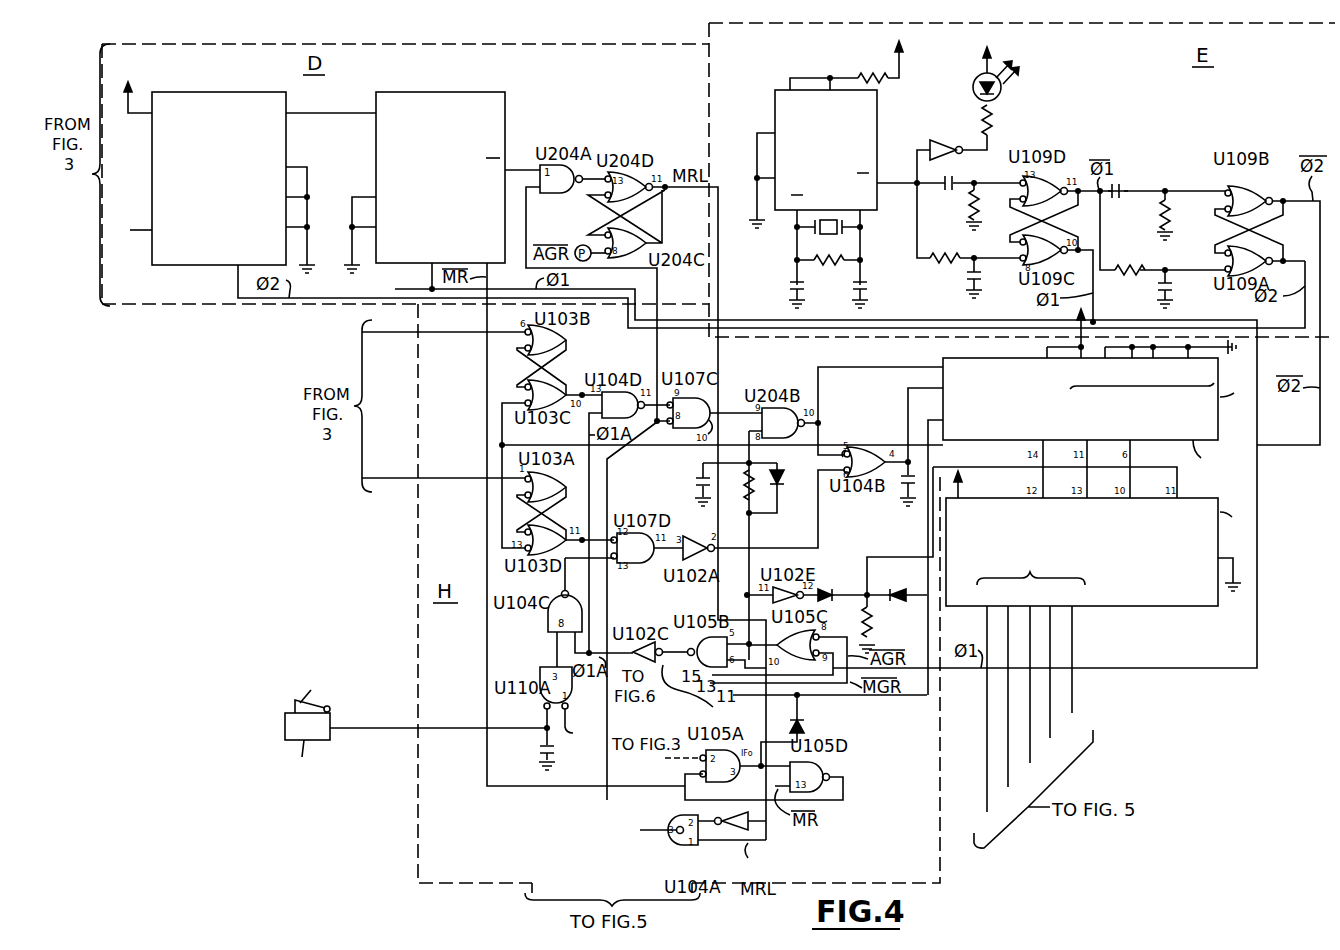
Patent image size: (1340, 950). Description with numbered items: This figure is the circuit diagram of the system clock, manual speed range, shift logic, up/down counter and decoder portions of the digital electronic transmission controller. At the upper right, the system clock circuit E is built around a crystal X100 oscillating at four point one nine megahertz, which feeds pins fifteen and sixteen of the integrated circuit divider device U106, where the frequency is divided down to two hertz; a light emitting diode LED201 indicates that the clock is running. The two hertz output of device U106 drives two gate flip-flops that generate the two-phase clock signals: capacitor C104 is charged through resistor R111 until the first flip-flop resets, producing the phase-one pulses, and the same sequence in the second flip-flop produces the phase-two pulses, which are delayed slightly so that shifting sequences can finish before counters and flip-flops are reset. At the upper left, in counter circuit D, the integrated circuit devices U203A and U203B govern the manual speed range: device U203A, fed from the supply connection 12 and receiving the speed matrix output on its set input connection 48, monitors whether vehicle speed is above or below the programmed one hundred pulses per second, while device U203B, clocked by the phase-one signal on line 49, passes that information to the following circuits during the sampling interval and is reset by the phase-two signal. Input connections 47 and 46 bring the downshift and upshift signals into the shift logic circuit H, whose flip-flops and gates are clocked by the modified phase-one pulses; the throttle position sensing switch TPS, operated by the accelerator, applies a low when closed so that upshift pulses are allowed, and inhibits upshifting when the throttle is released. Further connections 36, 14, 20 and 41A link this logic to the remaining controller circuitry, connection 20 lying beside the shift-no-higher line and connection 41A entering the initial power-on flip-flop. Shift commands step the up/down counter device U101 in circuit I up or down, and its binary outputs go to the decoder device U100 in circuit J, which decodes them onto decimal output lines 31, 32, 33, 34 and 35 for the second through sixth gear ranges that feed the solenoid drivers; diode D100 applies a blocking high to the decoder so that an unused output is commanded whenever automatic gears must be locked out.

The 12 volt supply 12 is at (132, 87).
The set input line from FIG. 3 48 is at (127, 230).
The phase one clock line 49 is at (811, 473).
The input line from FIG. 3 47 is at (443, 331).
The input line from FIG. 3 46 is at (443, 478).
The line to FIG. 5 36 is at (608, 816).
The line to FIG. 6 14 is at (646, 841).
The SNH line to FIG. 6 20 is at (580, 743).
The line to FIG. 3 41A is at (665, 762).
The decimal output line 2 to FIG. 5 31 is at (986, 717).
The decimal output line 3 to FIG. 5 32 is at (1007, 706).
The decimal output line 4 to FIG. 5 33 is at (1029, 694).
The decimal output line 5 to FIG. 5 34 is at (1051, 682).
The decimal output line 6 to FIG. 5 35 is at (1072, 670).
The integrated circuit device U203A is at (261, 178).
The integrated circuit device U203B is at (448, 177).
The integrated circuit divider device U106 is at (830, 157).
The light emitting diode LED201 is at (1022, 91).
The resistor R111 is at (943, 249).
The capacitor C104 is at (942, 278).
The crystal X100 is at (828, 259).
The up/down counter device U101 is at (1087, 414).
The decoder device U100 is at (1092, 560).
The diode D100 is at (896, 583).
The throttle position sensing switch TPS is at (307, 725).